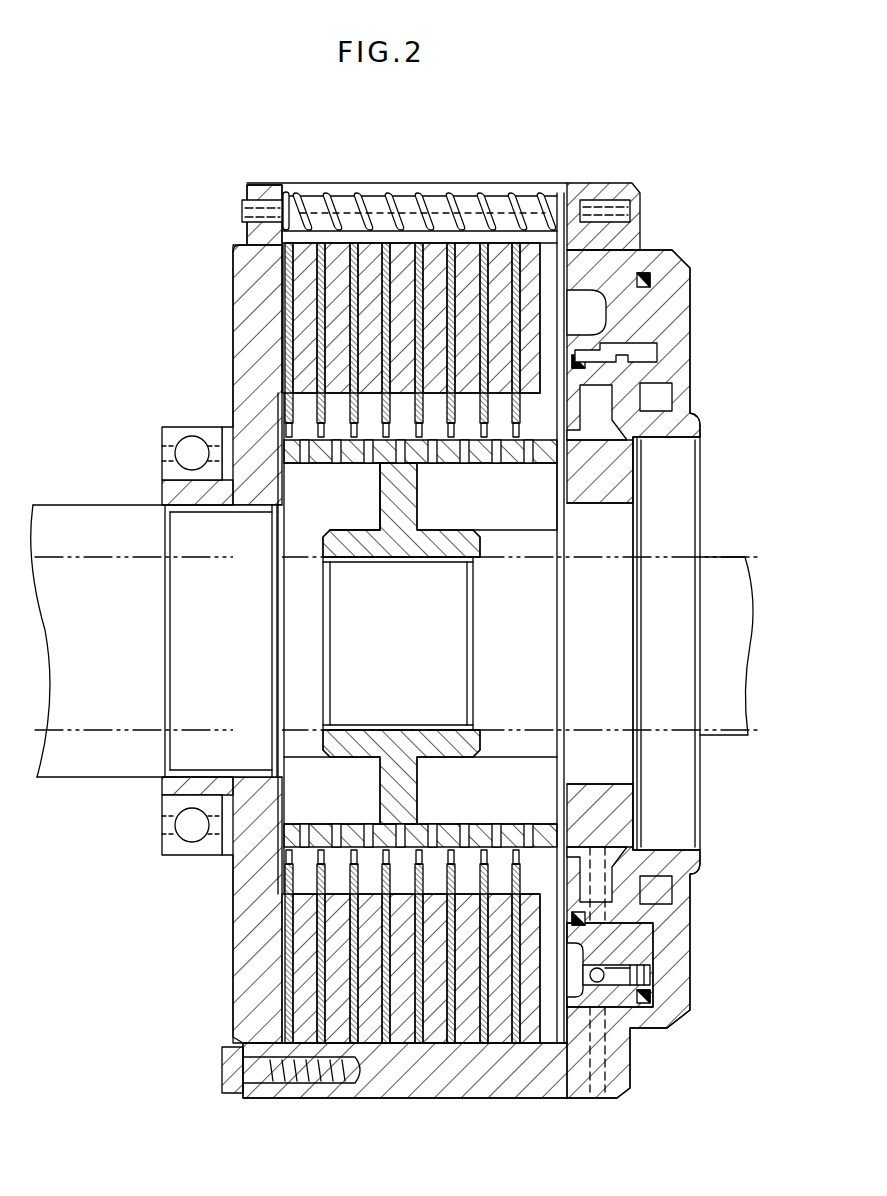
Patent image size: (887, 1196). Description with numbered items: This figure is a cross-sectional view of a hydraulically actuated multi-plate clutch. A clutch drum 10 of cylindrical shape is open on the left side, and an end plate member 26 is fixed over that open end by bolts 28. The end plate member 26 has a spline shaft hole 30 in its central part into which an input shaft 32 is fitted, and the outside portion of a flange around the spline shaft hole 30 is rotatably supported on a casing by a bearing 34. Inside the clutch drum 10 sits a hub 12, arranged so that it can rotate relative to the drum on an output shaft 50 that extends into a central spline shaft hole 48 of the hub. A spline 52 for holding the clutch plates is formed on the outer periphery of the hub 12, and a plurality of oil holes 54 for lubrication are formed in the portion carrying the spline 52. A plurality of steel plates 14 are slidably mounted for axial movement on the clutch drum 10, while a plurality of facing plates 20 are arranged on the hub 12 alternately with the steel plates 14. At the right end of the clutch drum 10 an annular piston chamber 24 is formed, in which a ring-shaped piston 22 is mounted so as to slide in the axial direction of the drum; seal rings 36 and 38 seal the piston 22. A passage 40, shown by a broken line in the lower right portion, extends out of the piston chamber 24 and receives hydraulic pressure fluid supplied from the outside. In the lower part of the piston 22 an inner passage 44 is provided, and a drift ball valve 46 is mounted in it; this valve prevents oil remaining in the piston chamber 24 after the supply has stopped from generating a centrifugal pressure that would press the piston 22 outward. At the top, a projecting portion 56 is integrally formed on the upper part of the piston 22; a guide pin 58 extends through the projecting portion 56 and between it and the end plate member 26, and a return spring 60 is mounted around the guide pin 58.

The clutch drum 10 is at (425, 1085).
The hub 12 is at (512, 520).
The steel plates 14 is at (350, 225).
The facing plates 20 is at (517, 265).
The ring-shaped piston 22 is at (650, 318).
The annular piston chamber 24 is at (657, 348).
The end plate member 26 is at (235, 298).
The bolts 28 is at (232, 1068).
The spline shaft hole 30 is at (195, 768).
The input shaft 32 is at (100, 505).
The bearing 34 is at (175, 432).
The seal ring 36 is at (650, 285).
The seal ring 38 is at (660, 393).
The passage 40 is at (615, 1060).
The inner passage 44 is at (612, 975).
The drift ball valve 46 is at (590, 1000).
The central spline shaft hole 48 is at (347, 565).
The output shaft 50 is at (700, 557).
The spline 52 is at (555, 433).
The oil holes 54 is at (305, 466).
The projecting portion 56 is at (575, 188).
The guide pin 58 is at (262, 210).
The return spring 60 is at (298, 200).